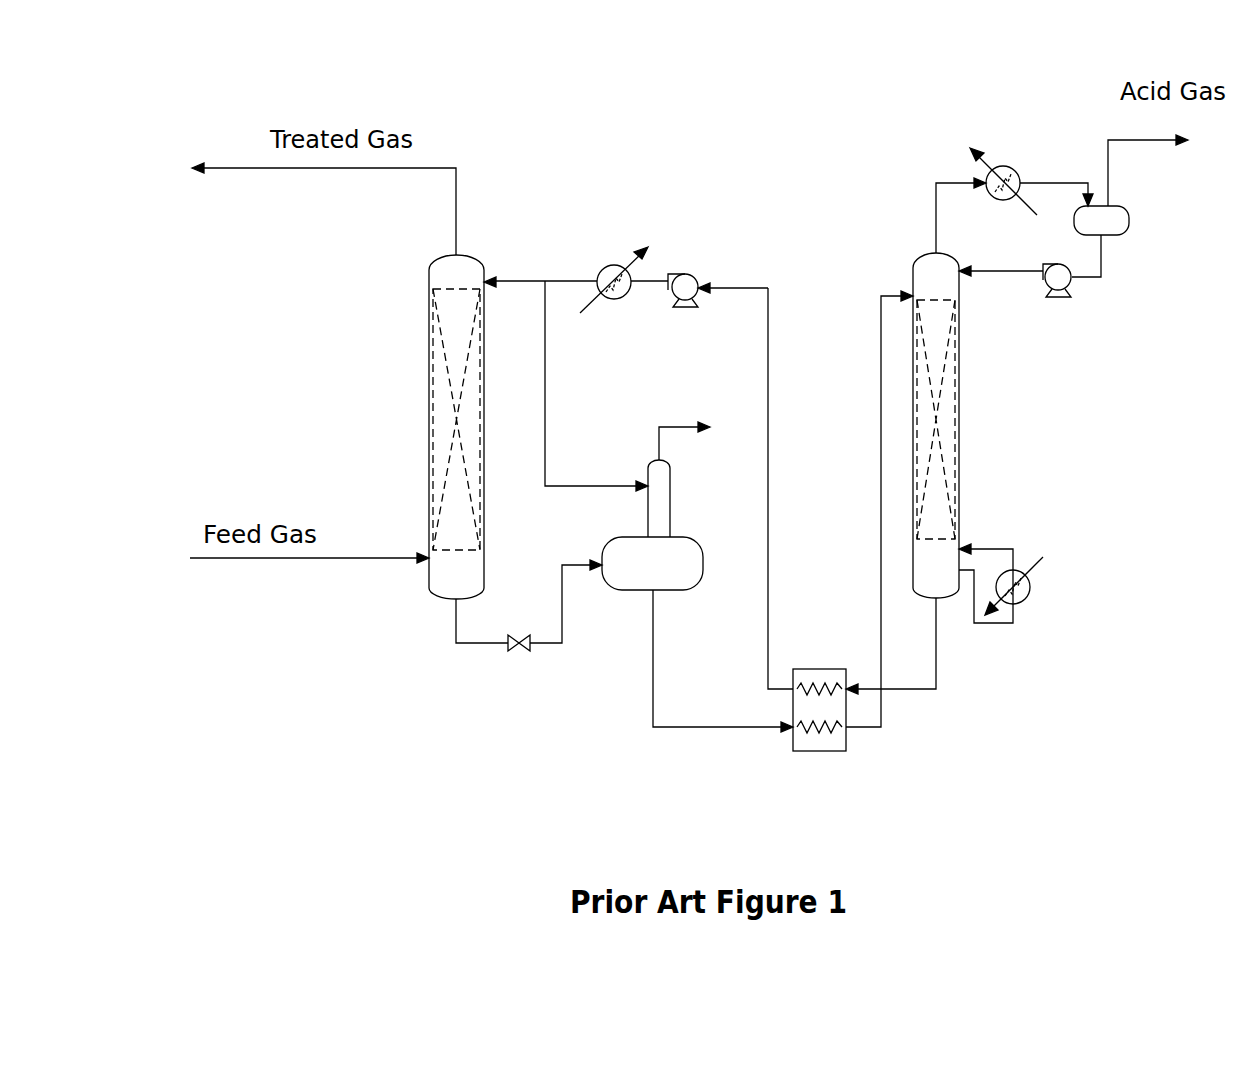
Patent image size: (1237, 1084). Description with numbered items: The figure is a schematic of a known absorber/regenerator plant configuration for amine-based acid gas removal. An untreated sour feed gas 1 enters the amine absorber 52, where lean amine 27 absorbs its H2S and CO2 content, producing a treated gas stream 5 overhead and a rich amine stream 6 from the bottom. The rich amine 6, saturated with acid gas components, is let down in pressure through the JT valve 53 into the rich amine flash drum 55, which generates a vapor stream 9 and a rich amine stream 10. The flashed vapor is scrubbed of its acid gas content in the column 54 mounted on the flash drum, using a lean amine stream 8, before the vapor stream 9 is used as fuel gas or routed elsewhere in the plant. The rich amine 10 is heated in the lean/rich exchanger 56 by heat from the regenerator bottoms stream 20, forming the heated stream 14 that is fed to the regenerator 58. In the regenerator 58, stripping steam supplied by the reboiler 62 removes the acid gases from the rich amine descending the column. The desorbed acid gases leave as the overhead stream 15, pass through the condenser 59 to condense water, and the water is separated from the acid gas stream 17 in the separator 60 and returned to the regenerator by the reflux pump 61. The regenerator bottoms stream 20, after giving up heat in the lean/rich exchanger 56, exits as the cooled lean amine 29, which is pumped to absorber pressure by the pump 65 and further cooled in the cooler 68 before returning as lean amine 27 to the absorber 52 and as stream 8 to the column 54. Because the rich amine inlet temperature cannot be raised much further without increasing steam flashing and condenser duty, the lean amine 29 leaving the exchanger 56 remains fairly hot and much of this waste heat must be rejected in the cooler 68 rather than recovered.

The sour feed gas 1 is at (392, 556).
The treated gas stream 5 is at (255, 166).
The rich amine stream 6 is at (455, 646).
The lean amine stream 8 is at (590, 485).
The vapor stream 9 is at (668, 426).
The rich amine stream 10 is at (652, 665).
The heated rich amine stream 14 is at (880, 540).
The overhead stream 15 is at (935, 180).
The acid gas stream 17 is at (1147, 139).
The regenerator bottoms stream 20 is at (937, 628).
The lean amine 27 is at (565, 280).
The cooled lean amine 29 is at (770, 492).
The amine absorber 52 is at (428, 280).
The JT valve 53 is at (516, 634).
The column 54 is at (672, 494).
The rich amine flash drum 55 is at (690, 538).
The lean/rich exchanger 56 is at (826, 668).
The regenerator 58 is at (965, 336).
The condenser 59 is at (1004, 165).
The separator 60 is at (1125, 206).
The reflux pump 61 is at (1072, 296).
The reboiler 62 is at (1031, 584).
The pump 65 is at (690, 275).
The cooler 68 is at (614, 264).